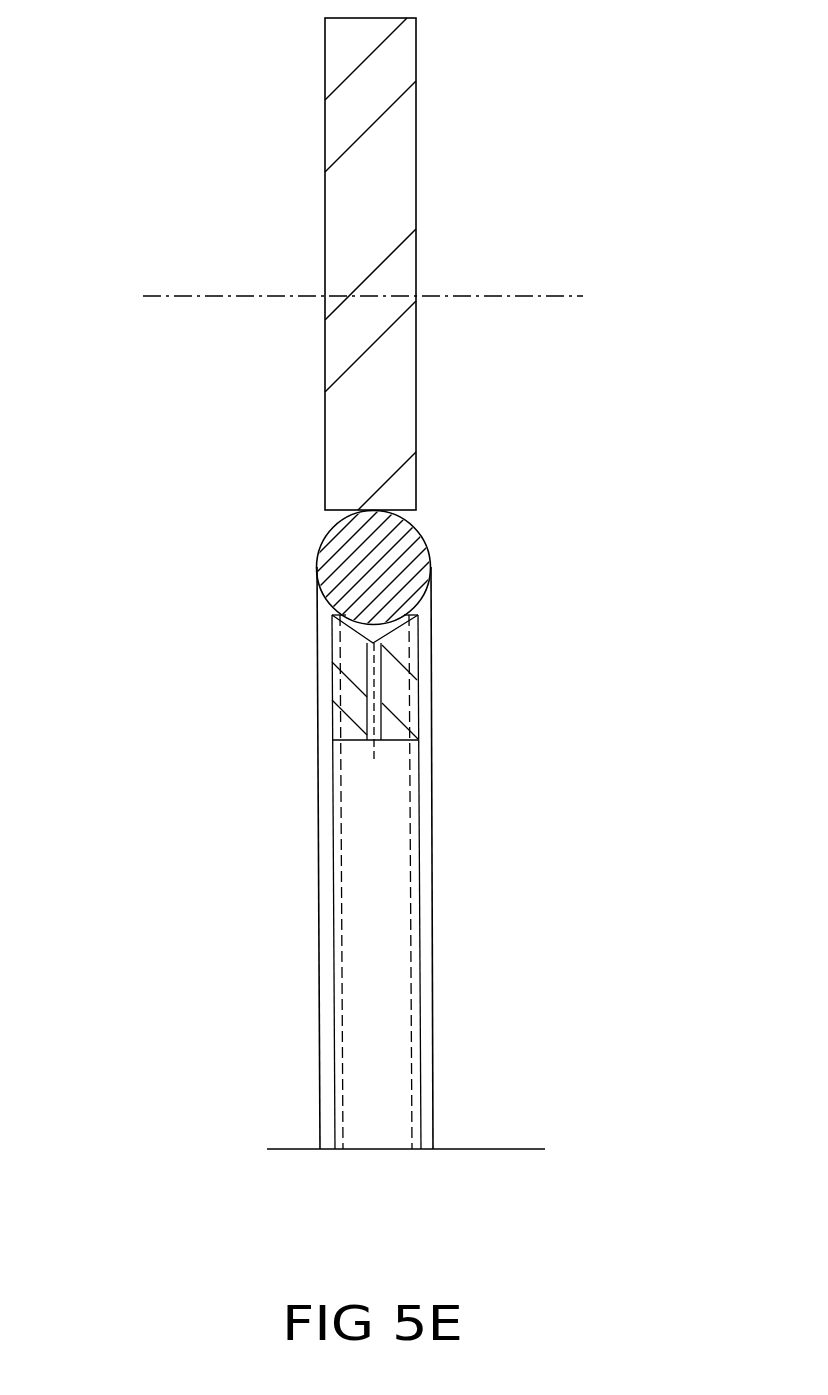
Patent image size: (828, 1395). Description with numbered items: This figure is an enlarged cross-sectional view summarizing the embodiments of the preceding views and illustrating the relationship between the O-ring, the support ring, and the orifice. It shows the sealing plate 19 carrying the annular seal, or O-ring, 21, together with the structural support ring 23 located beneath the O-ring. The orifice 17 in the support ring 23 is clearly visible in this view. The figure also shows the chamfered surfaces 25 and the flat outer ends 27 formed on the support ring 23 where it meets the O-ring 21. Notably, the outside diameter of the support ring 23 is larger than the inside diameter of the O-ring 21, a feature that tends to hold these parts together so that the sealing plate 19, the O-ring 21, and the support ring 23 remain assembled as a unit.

The orifice 17 is at (378, 735).
The sealing plate 19 is at (390, 203).
The annular seal (O-ring) 21 is at (397, 550).
The structural support ring 23 is at (395, 707).
The chamfered surfaces 25 is at (346, 622).
The flat outer ends 27 is at (333, 616).